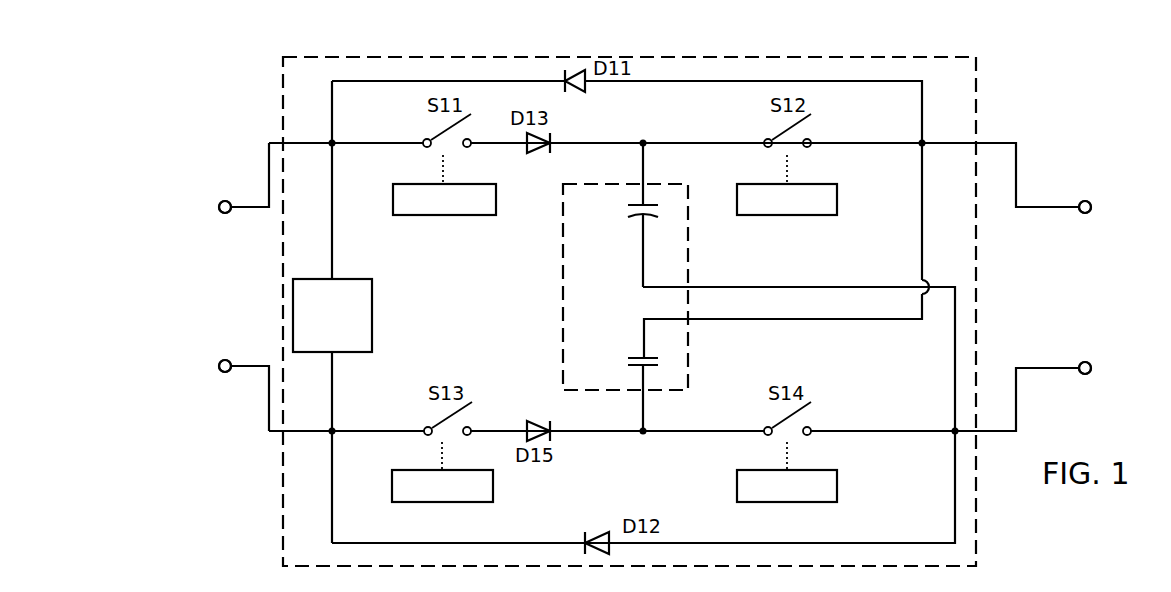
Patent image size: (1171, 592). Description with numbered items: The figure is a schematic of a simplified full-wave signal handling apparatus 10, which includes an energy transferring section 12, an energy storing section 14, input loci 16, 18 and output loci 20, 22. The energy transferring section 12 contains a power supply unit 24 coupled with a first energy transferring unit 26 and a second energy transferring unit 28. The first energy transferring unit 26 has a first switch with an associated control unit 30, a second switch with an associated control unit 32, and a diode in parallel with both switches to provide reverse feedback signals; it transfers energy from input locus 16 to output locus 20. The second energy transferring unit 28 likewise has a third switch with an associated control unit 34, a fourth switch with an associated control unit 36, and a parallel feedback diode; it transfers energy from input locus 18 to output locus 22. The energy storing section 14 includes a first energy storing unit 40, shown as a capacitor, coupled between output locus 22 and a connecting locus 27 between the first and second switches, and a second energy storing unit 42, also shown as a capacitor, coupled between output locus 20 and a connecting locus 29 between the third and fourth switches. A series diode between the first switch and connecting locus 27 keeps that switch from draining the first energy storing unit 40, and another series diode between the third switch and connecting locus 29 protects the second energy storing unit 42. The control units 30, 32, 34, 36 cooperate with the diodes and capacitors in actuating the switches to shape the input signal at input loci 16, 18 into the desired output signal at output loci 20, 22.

The signal handling apparatus 10 is at (1089, 546).
The energy transferring section 12 is at (977, 105).
The energy storing section 14 is at (562, 335).
The input locus 16 is at (226, 201).
The input locus 18 is at (226, 360).
The output locus 20 is at (1080, 210).
The output locus 22 is at (1081, 362).
The power supply unit 24 is at (367, 277).
The first energy transferring unit 26 is at (306, 108).
The connecting locus 27 is at (648, 147).
The second energy transferring unit 28 is at (306, 515).
The connecting locus 29 is at (648, 427).
The control unit 30 is at (428, 183).
The control unit 32 is at (838, 197).
The control unit 34 is at (494, 482).
The control unit 36 is at (737, 486).
The first energy storing unit 40 is at (632, 222).
The second energy storing unit 42 is at (633, 352).